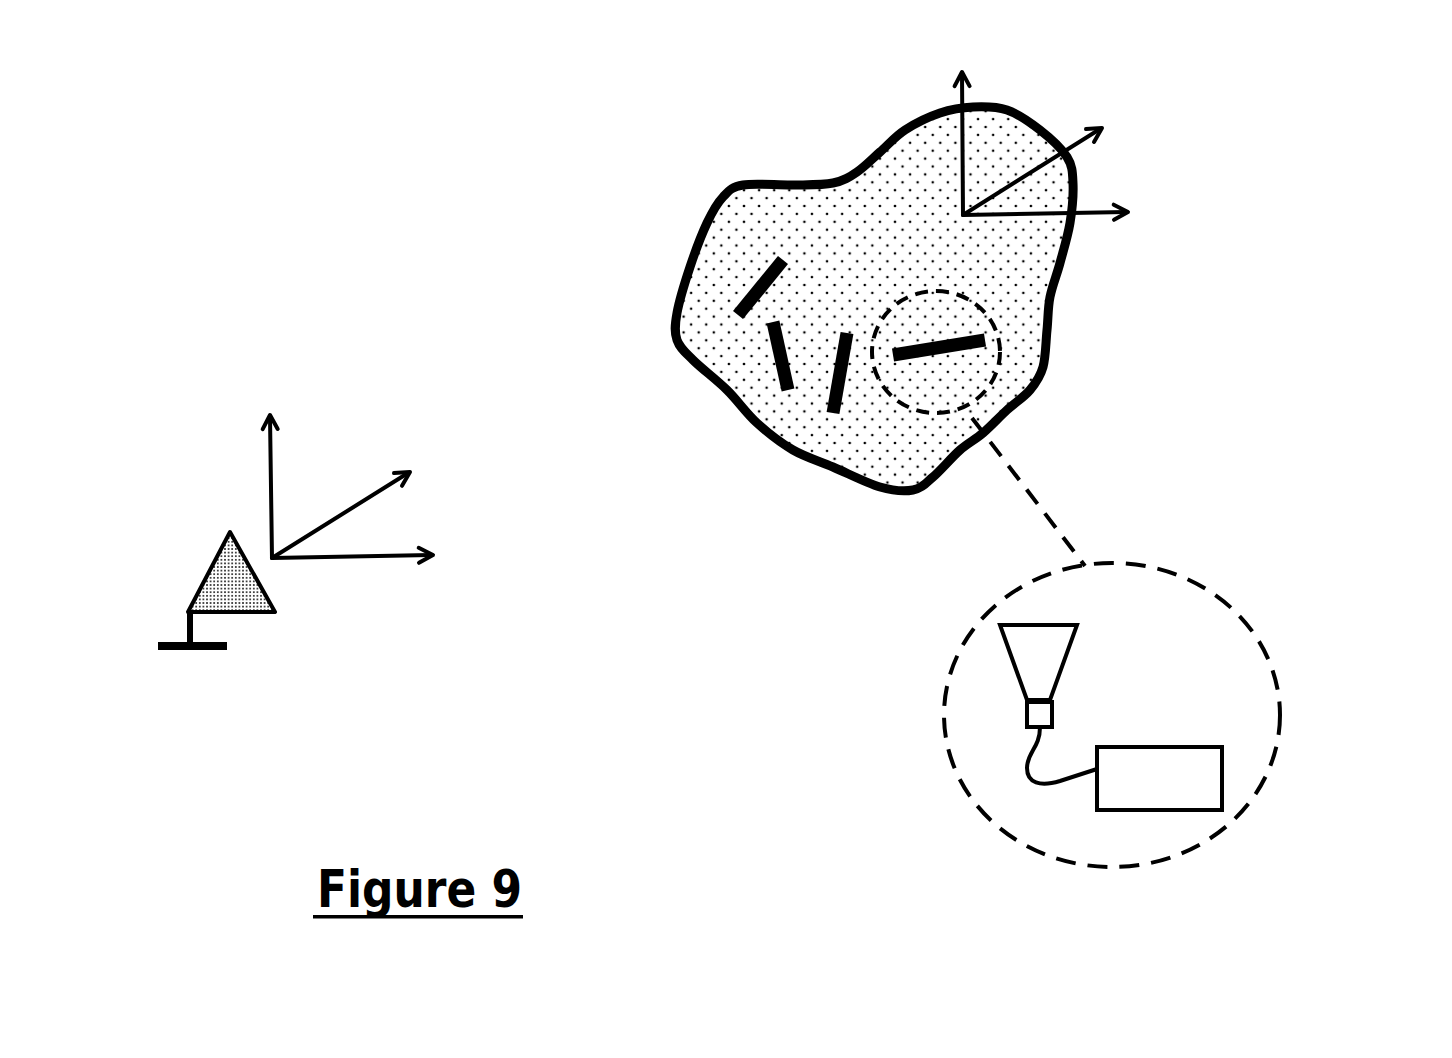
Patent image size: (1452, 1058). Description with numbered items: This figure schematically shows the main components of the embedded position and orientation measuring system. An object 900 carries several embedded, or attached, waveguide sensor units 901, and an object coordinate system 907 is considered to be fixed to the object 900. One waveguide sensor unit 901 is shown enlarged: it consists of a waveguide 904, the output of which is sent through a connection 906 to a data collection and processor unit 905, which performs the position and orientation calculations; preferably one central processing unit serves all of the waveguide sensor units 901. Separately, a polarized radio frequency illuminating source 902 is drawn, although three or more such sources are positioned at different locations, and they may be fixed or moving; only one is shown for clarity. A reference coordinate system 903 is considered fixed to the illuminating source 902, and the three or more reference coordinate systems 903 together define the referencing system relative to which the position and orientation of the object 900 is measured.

The object 900 is at (822, 149).
The waveguide sensor unit 901 is at (731, 254).
The polarized radio frequency illuminating source 902 is at (264, 652).
The reference coordinate system 903 is at (401, 587).
The waveguide 904 is at (980, 666).
The data collection and processor unit 905 is at (1254, 755).
The connection 906 is at (991, 780).
The object coordinate system 907 is at (1147, 144).